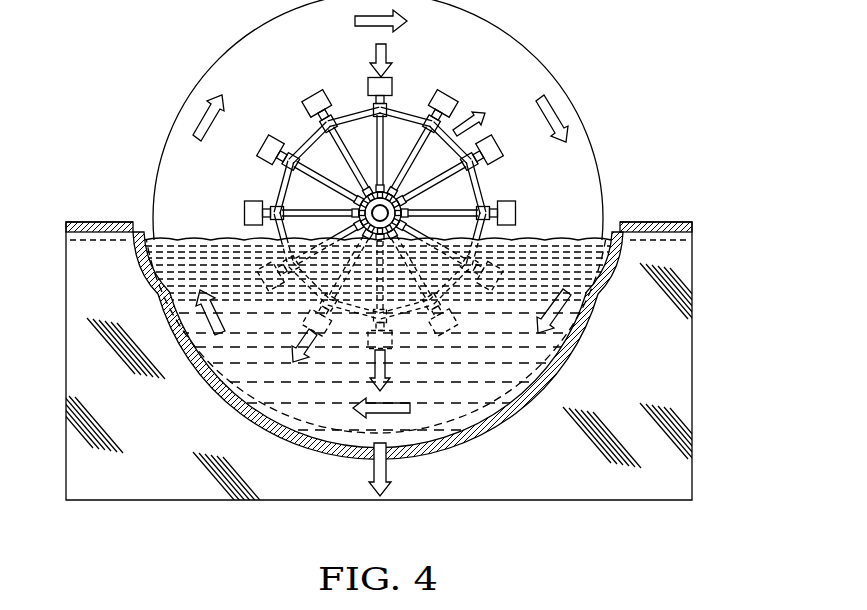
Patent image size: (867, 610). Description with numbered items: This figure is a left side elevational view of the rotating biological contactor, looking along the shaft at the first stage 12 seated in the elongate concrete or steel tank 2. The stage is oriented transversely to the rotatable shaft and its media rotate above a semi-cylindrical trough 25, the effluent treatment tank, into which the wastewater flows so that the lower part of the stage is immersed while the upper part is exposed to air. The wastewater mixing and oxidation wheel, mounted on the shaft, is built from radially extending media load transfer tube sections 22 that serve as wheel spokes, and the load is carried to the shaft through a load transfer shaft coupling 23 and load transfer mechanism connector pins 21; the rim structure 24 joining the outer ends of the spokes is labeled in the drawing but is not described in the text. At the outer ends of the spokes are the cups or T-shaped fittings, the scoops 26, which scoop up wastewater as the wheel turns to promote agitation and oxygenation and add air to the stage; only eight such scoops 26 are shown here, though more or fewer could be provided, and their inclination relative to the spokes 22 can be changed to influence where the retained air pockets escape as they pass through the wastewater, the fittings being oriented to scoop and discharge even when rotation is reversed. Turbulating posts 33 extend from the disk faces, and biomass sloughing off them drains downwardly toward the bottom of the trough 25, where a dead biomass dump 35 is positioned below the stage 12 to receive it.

The tank 2 is at (697, 347).
The first stage 12 is at (527, 50).
The load transfer mechanism connector pin 21 is at (360, 208).
The media load transfer tube section 22 is at (332, 180).
The load transfer shaft coupling 23 is at (272, 142).
The rim 24 is at (357, 108).
The semi-cylindrical trough 25 is at (617, 240).
The scoop 26 is at (452, 108).
The turbulating posts 33 is at (280, 226).
The dead biomass dump 35 is at (390, 465).